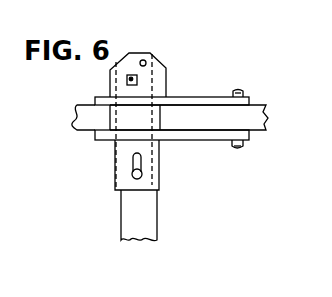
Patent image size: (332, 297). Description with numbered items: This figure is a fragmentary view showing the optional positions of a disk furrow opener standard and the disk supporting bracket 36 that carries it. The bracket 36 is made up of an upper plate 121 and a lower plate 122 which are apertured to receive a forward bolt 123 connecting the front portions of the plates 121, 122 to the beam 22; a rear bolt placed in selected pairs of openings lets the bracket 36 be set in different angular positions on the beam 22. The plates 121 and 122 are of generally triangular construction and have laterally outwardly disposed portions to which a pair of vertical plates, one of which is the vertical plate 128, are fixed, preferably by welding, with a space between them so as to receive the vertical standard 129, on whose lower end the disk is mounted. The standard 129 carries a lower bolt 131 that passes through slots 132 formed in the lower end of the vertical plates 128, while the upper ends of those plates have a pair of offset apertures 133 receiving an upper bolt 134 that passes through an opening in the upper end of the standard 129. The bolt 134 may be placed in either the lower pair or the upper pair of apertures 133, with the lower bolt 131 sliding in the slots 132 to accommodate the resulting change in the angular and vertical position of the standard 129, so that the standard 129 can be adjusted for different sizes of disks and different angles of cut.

The beam 22 is at (266, 119).
The disk supporting bracket 36 is at (175, 86).
The upper plate 121 is at (213, 98).
The lower plate 122 is at (246, 136).
The forward bolt 123 is at (243, 92).
The vertical plate 128 is at (124, 151).
The vertical standard 129 is at (147, 219).
The lower bolt 131 is at (140, 173).
The slot 132 is at (140, 163).
The offset aperture 133 is at (143, 60).
The upper bolt 134 is at (127, 80).